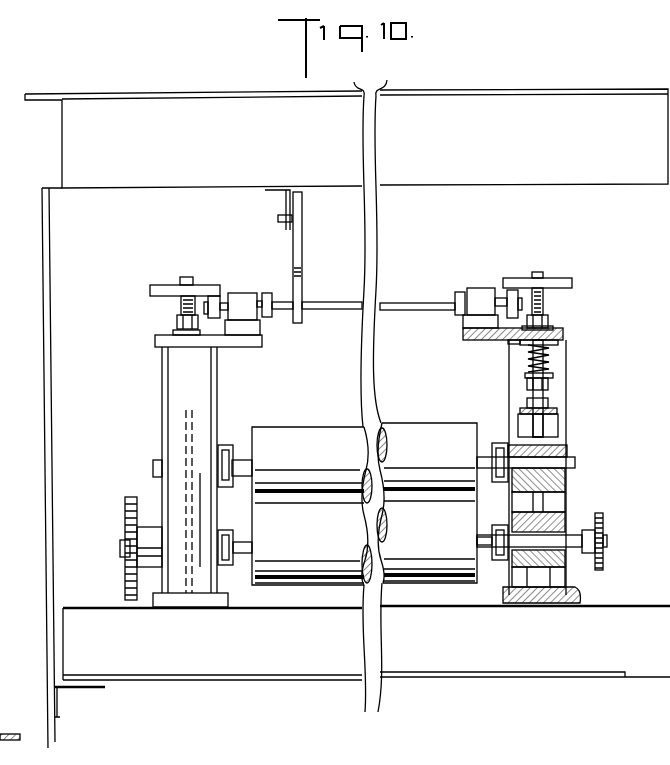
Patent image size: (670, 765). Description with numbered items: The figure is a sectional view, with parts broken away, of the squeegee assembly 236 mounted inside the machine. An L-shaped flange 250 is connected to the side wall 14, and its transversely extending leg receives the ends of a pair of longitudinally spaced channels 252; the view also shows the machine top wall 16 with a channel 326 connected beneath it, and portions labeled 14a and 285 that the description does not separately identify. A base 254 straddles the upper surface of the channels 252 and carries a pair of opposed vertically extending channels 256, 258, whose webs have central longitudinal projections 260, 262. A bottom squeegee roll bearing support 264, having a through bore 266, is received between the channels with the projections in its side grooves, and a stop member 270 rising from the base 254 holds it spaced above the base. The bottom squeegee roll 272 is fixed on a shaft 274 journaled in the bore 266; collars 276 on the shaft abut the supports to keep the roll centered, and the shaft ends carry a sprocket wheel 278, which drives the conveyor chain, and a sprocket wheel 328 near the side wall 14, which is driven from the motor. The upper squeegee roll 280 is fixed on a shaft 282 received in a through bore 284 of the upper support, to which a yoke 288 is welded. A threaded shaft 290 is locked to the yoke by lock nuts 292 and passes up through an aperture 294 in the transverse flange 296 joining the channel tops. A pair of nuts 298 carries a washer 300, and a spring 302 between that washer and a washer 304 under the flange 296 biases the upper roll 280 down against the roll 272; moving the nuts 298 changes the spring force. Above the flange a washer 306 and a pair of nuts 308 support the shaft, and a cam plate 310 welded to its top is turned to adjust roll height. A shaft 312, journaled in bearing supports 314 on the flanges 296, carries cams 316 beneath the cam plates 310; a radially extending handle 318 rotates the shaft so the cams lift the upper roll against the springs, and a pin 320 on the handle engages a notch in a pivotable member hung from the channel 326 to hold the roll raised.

The upper frame plate 14a is at (36, 103).
The side wall 14 is at (43, 413).
The top wall 16 is at (370, 389).
The channel 326 is at (455, 147).
The squeegee assembly 236 is at (455, 268).
The pin 320 is at (278, 220).
The handle 318 is at (301, 238).
The cam plate 310 is at (152, 284).
The threaded shaft 290 is at (180, 304).
The nuts 308 is at (176, 321).
The washer 306 is at (172, 334).
The cam 316 is at (219, 296).
The bearing support 314 is at (244, 297).
The shaft 312 is at (395, 302).
The transverse flange 296 is at (236, 340).
The aperture 294 is at (508, 342).
The washer 304 is at (560, 341).
The channel 256 is at (162, 380).
The longitudinal projection 260 is at (195, 412).
The shaft 282 is at (237, 462).
The collar 276 is at (233, 532).
The sprocket wheel 328 is at (129, 497).
The bottom squeegee roll 272 is at (403, 565).
The upper squeegee roll 280 is at (393, 428).
The shaft 274 is at (491, 550).
The channel 258 is at (553, 385).
The washer 300 is at (553, 368).
The spring 302 is at (528, 357).
The nuts 298 is at (557, 375).
The lock nuts 292 is at (520, 411).
The yoke 288 is at (548, 428).
The through bore 284 is at (583, 443).
The bearing block 285 is at (568, 482).
The longitudinal projection 262 is at (544, 502).
The bottom squeegee roll bearing support 264 is at (562, 520).
The through bore 266 is at (597, 520).
The sprocket wheel 278 is at (607, 553).
The stop member 270 is at (567, 578).
The base 254 is at (233, 596).
The channel 252 is at (233, 650).
The L-shaped flange 250 is at (78, 693).